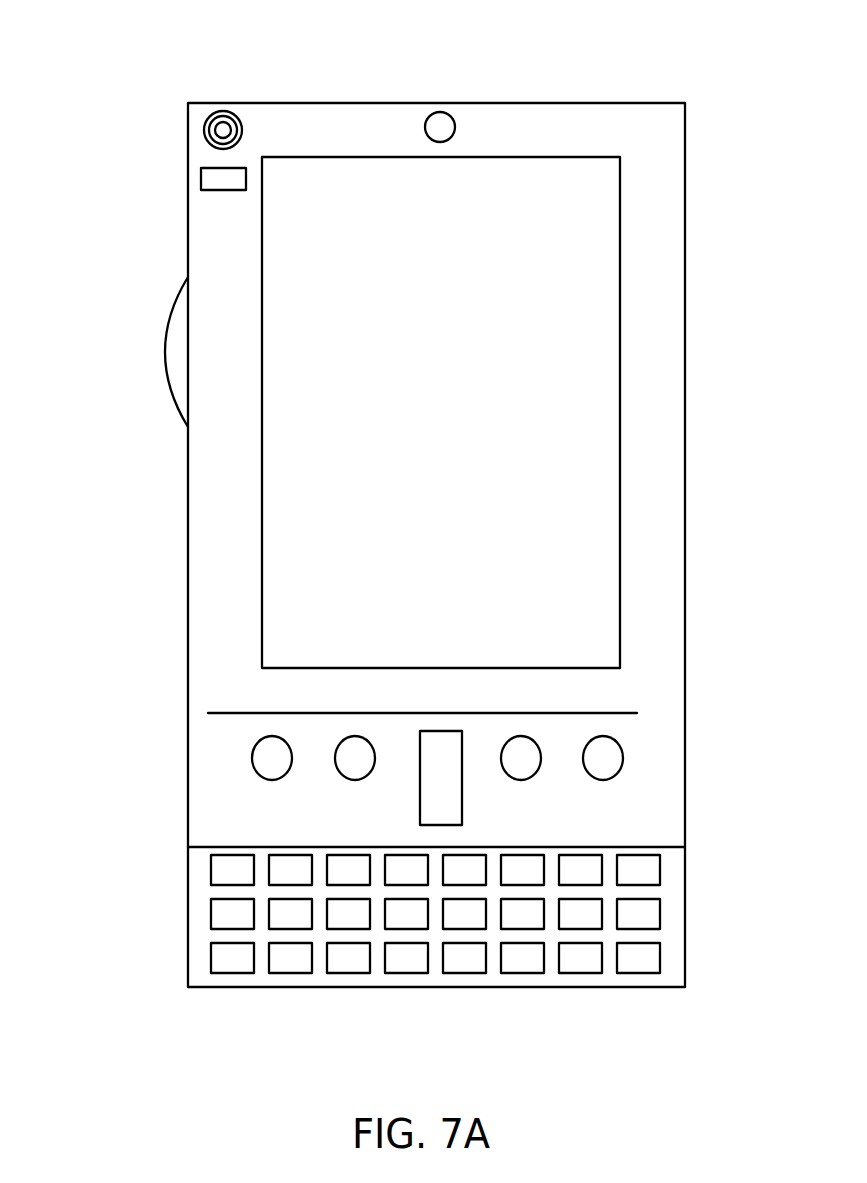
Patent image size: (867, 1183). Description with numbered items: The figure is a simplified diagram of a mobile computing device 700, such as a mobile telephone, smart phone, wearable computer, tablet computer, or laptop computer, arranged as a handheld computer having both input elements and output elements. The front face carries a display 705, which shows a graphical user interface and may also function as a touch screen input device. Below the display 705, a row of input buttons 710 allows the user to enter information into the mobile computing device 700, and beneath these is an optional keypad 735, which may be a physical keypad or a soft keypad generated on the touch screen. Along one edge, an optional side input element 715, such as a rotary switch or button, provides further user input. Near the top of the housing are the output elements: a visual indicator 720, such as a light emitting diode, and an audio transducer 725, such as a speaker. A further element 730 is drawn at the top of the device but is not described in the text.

The mobile computing device 700 is at (672, 122).
The display 705 is at (372, 582).
The input buttons 710 is at (440, 785).
The side input element 715 is at (177, 353).
The visual indicator 720 is at (203, 184).
The audio transducer 725 is at (200, 133).
The speaker 730 is at (450, 125).
The keypad 735 is at (197, 962).